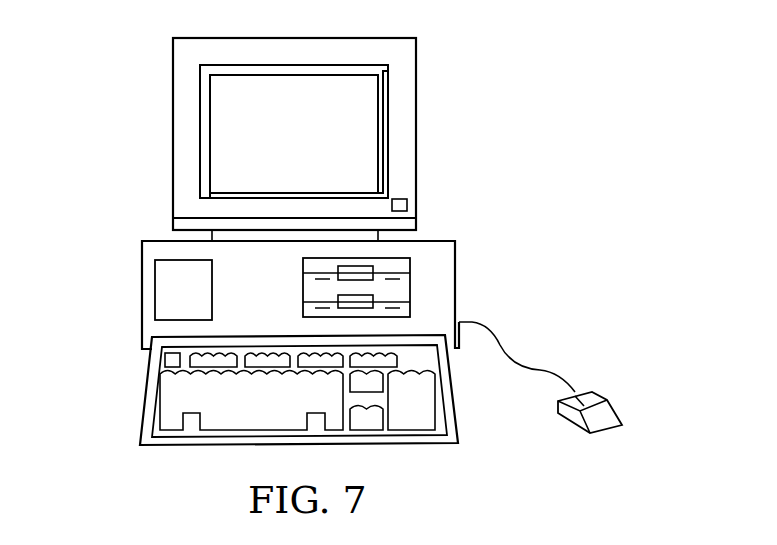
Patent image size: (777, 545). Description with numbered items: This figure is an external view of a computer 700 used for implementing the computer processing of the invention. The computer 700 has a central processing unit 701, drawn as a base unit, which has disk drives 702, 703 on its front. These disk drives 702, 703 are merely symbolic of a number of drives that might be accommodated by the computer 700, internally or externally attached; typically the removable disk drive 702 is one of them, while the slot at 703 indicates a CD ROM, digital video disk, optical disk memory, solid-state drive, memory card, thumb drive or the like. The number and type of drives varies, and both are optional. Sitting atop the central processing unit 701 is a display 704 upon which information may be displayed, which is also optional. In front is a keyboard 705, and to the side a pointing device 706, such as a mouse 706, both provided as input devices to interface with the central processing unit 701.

The computer 700 is at (117, 120).
The central processing unit 701 is at (142, 270).
The removable disk drive 702 is at (297, 275).
The slot 703 is at (297, 305).
The display 704 is at (417, 98).
The keyboard 705 is at (143, 388).
The pointing device 706 is at (617, 407).